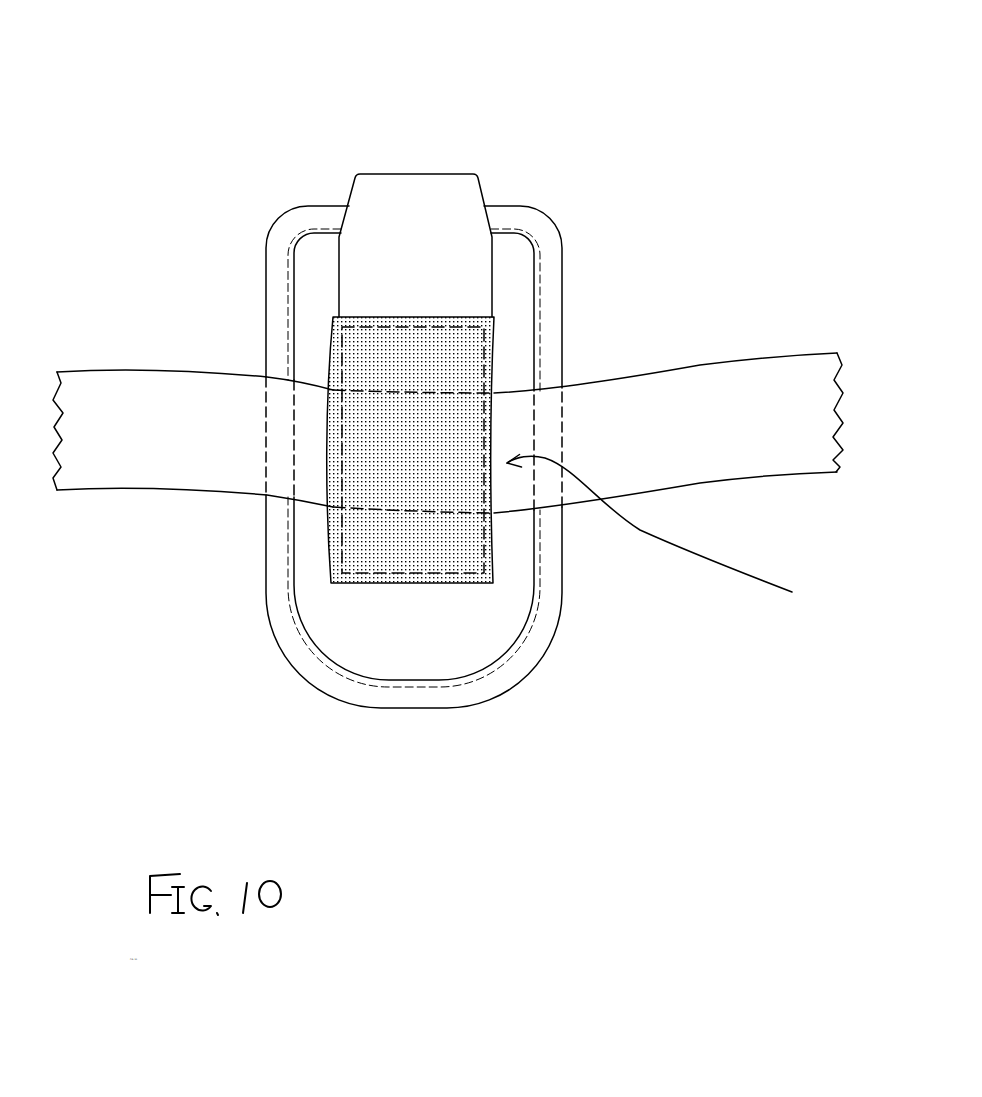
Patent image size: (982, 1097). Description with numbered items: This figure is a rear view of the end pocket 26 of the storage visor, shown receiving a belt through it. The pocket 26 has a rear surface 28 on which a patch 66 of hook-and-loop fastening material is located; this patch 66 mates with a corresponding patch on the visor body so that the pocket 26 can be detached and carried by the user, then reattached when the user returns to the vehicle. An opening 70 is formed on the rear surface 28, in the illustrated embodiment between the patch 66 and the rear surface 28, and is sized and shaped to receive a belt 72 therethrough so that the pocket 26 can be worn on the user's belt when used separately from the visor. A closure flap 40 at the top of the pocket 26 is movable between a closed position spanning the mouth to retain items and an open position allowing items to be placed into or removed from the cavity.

The pocket 26 is at (571, 167).
The rear surface 28 is at (510, 277).
The closure flap 40 is at (432, 178).
The patch of hook-and-loop fastening material 66 is at (467, 357).
The opening 70 is at (678, 539).
The strap 72 is at (748, 382).